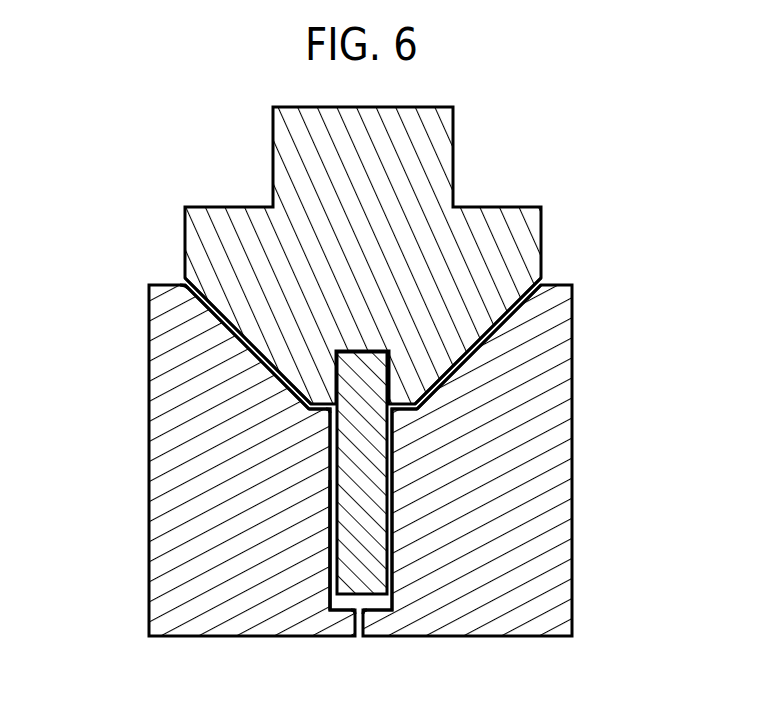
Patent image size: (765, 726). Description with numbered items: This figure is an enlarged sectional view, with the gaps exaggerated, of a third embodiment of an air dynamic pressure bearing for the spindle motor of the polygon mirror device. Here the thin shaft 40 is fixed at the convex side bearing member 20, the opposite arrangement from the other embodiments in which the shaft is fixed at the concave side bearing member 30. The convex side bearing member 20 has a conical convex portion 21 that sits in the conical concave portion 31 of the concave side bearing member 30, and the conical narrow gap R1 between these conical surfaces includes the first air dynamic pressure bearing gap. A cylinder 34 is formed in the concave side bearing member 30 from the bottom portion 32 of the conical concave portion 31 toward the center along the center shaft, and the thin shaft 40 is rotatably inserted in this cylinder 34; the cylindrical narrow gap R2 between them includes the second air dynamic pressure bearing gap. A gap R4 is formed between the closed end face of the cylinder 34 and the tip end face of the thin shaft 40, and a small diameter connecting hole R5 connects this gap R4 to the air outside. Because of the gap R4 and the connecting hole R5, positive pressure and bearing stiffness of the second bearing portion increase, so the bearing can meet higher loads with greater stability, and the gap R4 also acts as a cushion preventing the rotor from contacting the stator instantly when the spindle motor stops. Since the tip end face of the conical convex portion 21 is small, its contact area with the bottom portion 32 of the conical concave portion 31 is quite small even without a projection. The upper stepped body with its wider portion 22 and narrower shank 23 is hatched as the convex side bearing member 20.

The convex side bearing member 20 is at (427, 131).
The conical convex portion 21 is at (647, 343).
The wide body portion of upper die 22 is at (515, 231).
The shank portion of upper die 23 is at (284, 146).
The concave side bearing member 30 is at (193, 620).
The conical concave portion 31 is at (525, 340).
The bottom portion 32 is at (393, 411).
The cylinder 34 is at (325, 540).
The thin shaft 40 is at (366, 521).
The conical narrow gap R1 is at (228, 338).
The cylindrical narrow gap R2 is at (327, 488).
The gap R4 is at (371, 601).
The connecting hole R5 is at (330, 627).